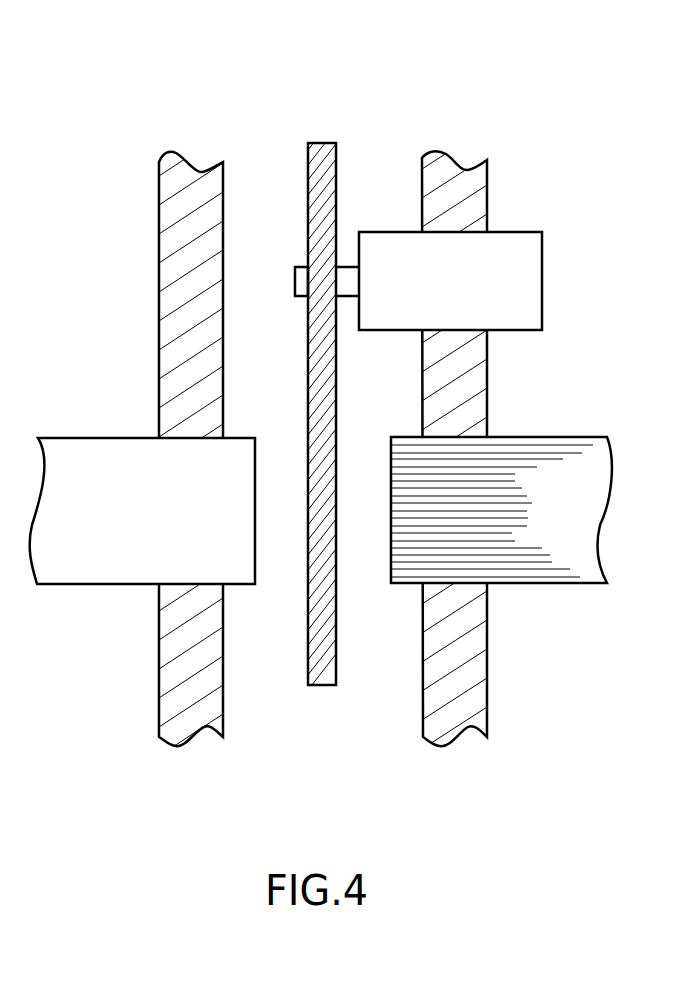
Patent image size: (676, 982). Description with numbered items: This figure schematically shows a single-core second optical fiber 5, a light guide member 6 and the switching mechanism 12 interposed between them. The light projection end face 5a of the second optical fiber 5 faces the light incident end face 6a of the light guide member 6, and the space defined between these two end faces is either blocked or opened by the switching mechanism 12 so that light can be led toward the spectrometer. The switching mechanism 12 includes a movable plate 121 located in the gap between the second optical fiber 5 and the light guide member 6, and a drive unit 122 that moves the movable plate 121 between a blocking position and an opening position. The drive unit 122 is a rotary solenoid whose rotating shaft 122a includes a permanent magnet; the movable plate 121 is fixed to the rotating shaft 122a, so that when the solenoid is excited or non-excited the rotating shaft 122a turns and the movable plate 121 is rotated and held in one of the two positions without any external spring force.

The switching mechanism 12 is at (432, 345).
The movable plate 121 is at (307, 173).
The drive unit 122 is at (542, 280).
The rotating shaft 122a is at (300, 296).
The second optical fiber 5 is at (156, 445).
The light projection end face 5a is at (255, 553).
The light guide member 6 is at (489, 438).
The light incident end face 6a is at (391, 552).